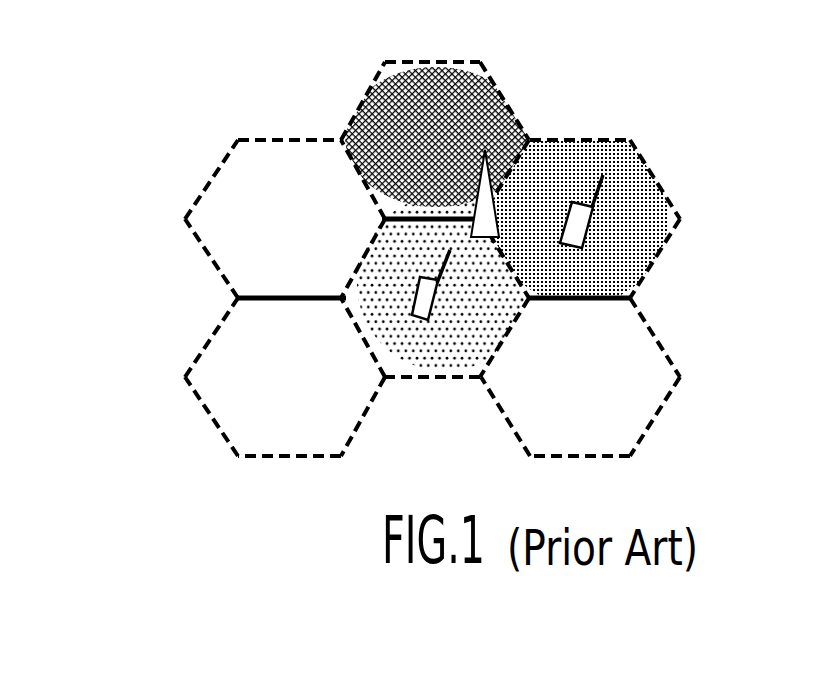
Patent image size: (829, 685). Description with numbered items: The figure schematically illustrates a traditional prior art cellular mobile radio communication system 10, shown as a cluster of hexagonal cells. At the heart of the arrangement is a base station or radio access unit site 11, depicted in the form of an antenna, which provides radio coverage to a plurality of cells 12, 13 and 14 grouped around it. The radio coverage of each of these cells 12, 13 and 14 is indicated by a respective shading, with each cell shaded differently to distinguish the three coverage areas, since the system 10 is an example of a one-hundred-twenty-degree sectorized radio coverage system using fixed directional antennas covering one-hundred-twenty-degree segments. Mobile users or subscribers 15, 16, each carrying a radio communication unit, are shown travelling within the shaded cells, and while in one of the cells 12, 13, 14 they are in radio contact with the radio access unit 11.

The cellular mobile radio communication system 10 is at (180, 291).
The base station or radio access unit site 11 is at (487, 210).
The cell 12 is at (483, 64).
The cell 13 is at (628, 284).
The cell 14 is at (480, 363).
The mobile user or subscriber 15 is at (573, 224).
The mobile user or subscriber 16 is at (425, 303).